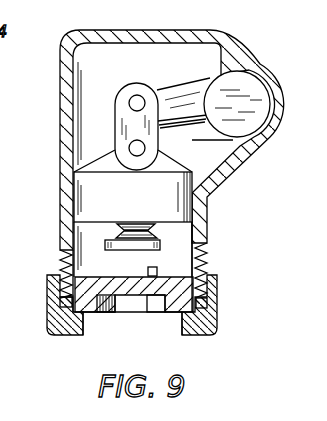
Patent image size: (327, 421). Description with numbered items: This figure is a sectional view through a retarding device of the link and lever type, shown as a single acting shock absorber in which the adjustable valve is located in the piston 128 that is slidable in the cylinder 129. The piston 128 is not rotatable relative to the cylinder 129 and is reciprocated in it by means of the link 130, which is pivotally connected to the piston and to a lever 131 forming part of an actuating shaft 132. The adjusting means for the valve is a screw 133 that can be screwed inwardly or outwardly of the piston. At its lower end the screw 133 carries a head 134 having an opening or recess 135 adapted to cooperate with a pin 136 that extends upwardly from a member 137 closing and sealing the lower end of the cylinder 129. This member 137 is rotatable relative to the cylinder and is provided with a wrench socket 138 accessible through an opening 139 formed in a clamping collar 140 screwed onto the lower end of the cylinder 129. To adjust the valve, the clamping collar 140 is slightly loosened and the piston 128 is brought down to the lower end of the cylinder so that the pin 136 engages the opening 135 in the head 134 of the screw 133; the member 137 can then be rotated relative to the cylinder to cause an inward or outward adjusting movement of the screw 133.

The piston 128 is at (183, 200).
The cylinder 129 is at (68, 213).
The link 130 is at (122, 122).
The lever 131 is at (180, 90).
The actuating shaft 132 is at (263, 99).
The screw 133 is at (107, 243).
The head 134 is at (133, 250).
The opening 135 is at (162, 233).
The pin 136 is at (156, 268).
The member 137 is at (194, 276).
The wrench socket 138 is at (130, 305).
The opening 139 is at (173, 325).
The clamping collar 140 is at (218, 310).